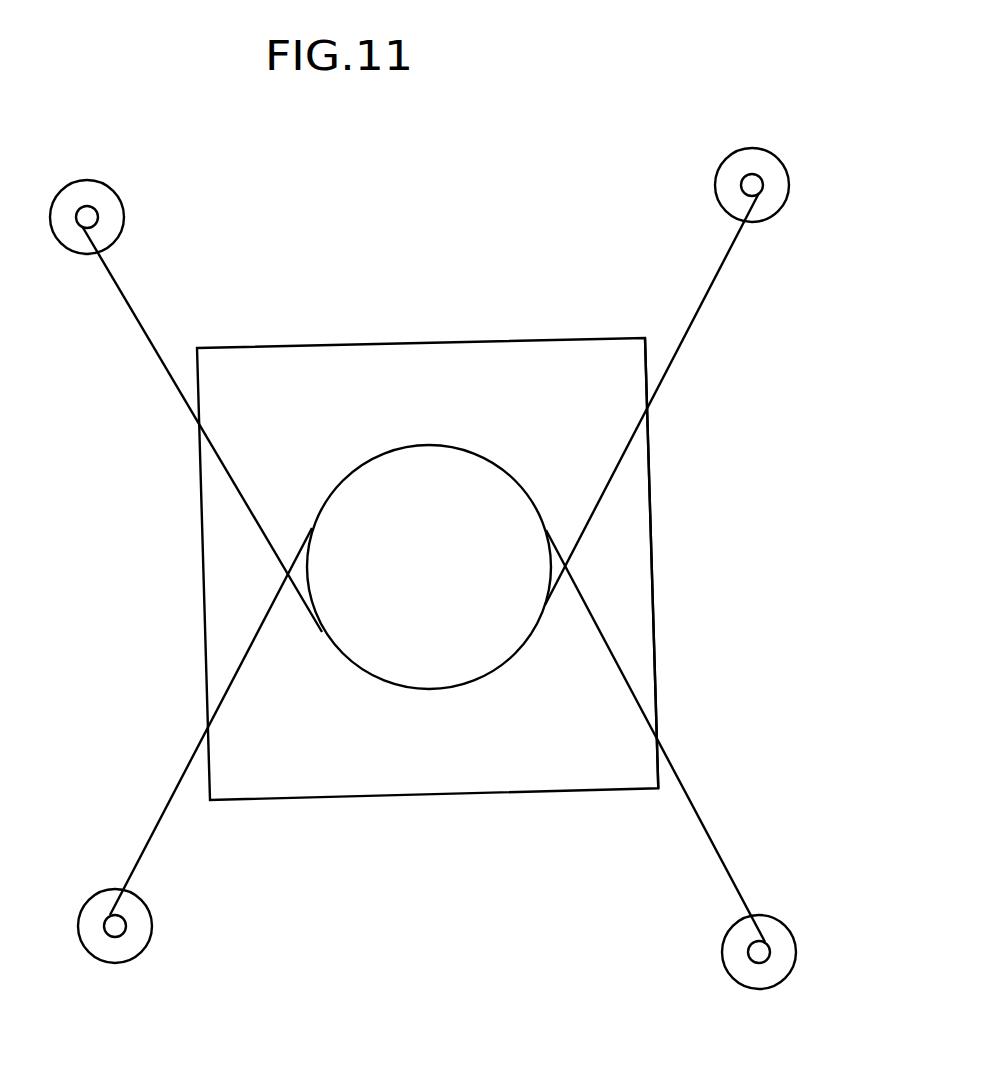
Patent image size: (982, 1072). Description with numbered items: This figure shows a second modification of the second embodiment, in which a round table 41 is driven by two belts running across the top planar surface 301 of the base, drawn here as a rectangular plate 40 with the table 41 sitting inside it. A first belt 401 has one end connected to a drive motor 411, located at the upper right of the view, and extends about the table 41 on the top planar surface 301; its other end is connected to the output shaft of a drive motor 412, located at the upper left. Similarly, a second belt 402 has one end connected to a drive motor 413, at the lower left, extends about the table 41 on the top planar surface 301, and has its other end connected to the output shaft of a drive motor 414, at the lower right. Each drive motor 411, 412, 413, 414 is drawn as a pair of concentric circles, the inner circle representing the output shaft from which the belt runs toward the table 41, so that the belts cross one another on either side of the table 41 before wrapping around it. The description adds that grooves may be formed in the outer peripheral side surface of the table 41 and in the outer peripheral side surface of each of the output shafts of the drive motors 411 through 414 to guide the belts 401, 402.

The plate 40 is at (651, 478).
The table 41 is at (440, 447).
The top planar surface 301 is at (637, 562).
The first belt 401 is at (706, 295).
The second belt 402 is at (723, 857).
The drive motor 411 is at (737, 153).
The drive motor 412 is at (113, 202).
The drive motor 413 is at (147, 927).
The drive motor 414 is at (732, 955).